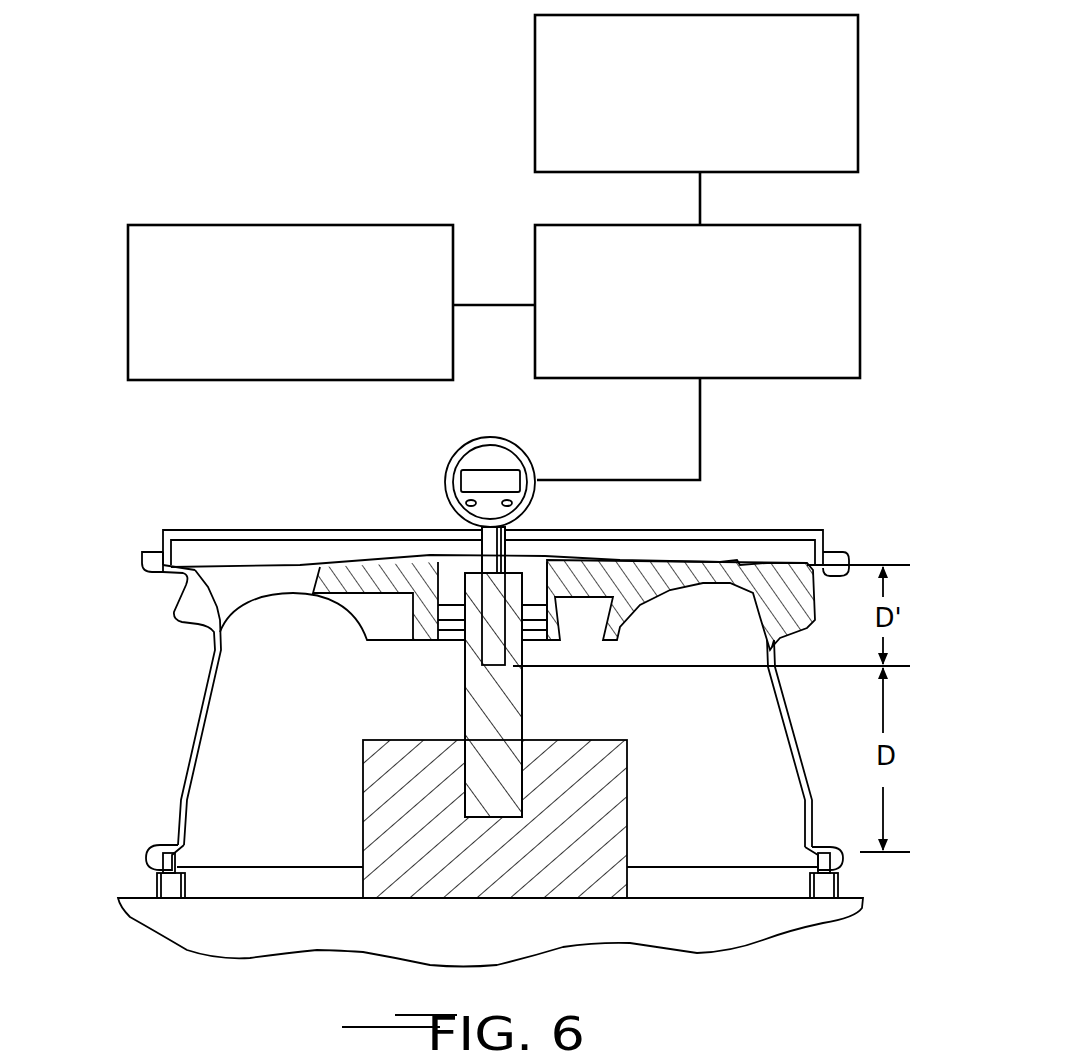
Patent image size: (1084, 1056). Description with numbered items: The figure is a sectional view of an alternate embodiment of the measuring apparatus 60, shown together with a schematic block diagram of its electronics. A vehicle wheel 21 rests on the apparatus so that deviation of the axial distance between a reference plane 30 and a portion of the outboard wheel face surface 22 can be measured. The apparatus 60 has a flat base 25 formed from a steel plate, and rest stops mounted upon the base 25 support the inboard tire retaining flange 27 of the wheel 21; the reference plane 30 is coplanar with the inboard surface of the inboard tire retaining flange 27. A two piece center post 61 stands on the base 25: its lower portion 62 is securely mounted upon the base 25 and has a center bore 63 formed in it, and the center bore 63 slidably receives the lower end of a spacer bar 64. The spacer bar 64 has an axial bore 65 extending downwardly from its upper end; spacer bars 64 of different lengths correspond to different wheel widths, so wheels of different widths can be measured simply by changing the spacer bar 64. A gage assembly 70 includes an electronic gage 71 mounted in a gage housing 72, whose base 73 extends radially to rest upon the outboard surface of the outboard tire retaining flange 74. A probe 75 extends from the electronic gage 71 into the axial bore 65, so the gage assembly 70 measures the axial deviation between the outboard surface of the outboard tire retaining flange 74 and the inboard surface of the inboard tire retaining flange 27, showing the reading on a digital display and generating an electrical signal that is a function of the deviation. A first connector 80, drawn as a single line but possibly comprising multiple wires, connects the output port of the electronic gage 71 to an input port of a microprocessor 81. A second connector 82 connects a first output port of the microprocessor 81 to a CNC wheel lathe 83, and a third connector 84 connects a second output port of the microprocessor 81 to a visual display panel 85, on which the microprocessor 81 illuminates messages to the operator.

The vehicle wheel 21 is at (185, 750).
The outboard wheel face surface 22 is at (748, 562).
The flat base 25 is at (441, 950).
The inboard tire retaining flange 27 is at (150, 845).
The reference plane 30 is at (865, 850).
The apparatus 60 is at (852, 490).
The two piece center post 61 is at (552, 726).
The lower portion 62 is at (627, 795).
The center bore 63 is at (480, 772).
The spacer bar 64 is at (465, 710).
The axial bore 65 is at (490, 655).
The gage assembly 70 is at (530, 440).
The electronic gage 71 is at (488, 456).
The gage housing 72 is at (535, 468).
The base 73 is at (585, 530).
The outboard tire retaining flange 74 is at (162, 573).
The probe 75 is at (490, 545).
The first connector 80 is at (703, 421).
The microprocessor 81 is at (860, 340).
The second connector 82 is at (700, 197).
The CNC wheel lathe 83 is at (535, 82).
The third connector 84 is at (485, 303).
The visual display panel 85 is at (200, 225).